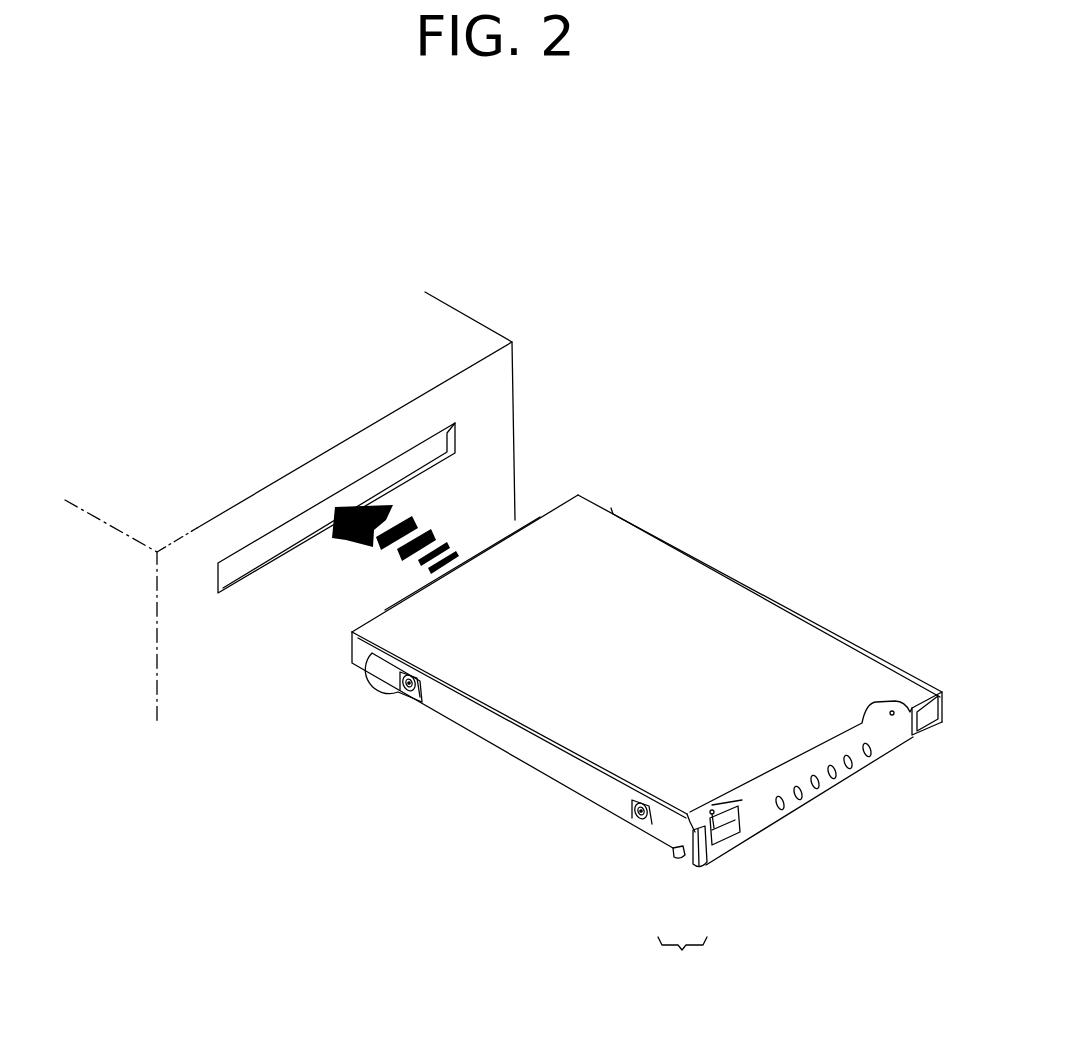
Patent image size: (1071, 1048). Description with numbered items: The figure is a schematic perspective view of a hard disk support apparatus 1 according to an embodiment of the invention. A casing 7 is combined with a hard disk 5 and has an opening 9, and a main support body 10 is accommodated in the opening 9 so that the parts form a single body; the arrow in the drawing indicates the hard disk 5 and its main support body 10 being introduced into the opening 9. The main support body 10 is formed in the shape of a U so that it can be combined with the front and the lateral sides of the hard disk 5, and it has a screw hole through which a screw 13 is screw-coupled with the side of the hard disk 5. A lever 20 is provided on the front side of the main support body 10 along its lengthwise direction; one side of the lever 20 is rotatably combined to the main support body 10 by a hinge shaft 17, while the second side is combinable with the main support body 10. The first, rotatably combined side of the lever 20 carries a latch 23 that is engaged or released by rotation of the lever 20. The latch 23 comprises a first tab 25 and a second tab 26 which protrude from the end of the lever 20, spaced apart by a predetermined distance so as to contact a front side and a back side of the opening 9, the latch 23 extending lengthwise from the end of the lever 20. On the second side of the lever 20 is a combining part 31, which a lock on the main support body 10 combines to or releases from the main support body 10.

The hard disk support apparatus 1 is at (755, 548).
The hard disk 5 is at (507, 695).
The casing 7 is at (508, 387).
The opening 9 is at (462, 433).
The main support body 10 is at (573, 777).
The screw 13 is at (409, 697).
The hinge shaft 17 is at (717, 845).
The lever 20 is at (780, 826).
The latch 23 is at (669, 978).
The first tab 25 is at (676, 858).
The second tab 26 is at (702, 868).
The combining part 31 is at (900, 711).